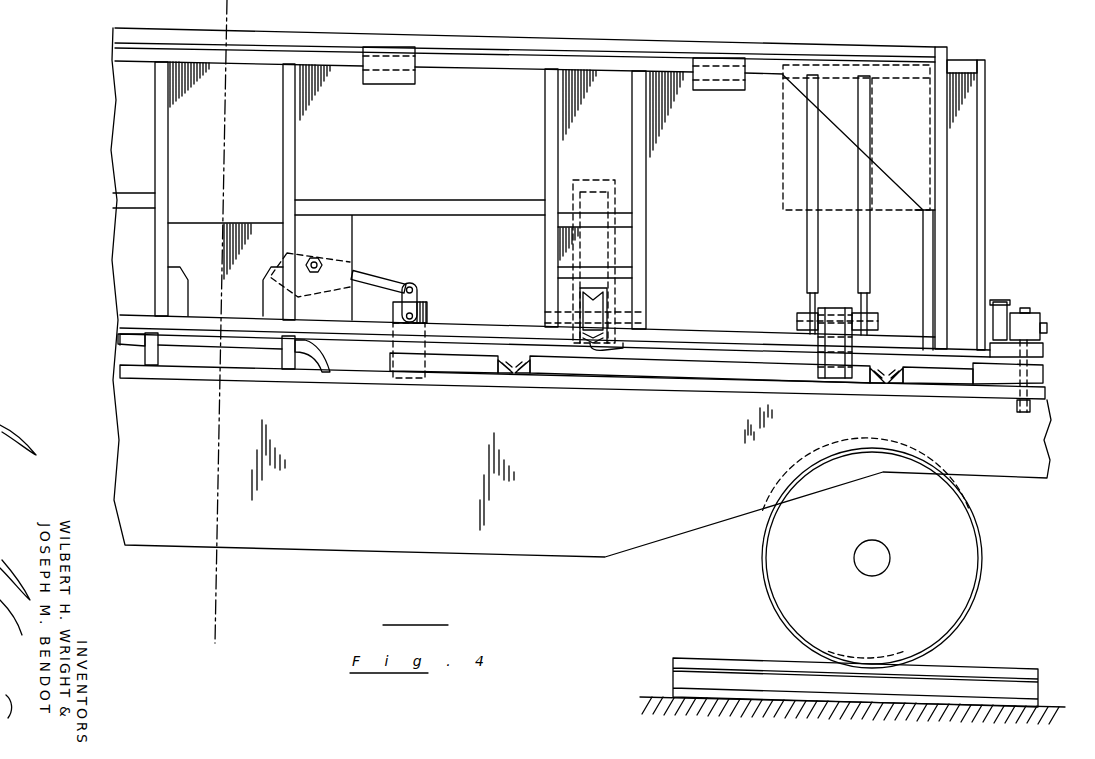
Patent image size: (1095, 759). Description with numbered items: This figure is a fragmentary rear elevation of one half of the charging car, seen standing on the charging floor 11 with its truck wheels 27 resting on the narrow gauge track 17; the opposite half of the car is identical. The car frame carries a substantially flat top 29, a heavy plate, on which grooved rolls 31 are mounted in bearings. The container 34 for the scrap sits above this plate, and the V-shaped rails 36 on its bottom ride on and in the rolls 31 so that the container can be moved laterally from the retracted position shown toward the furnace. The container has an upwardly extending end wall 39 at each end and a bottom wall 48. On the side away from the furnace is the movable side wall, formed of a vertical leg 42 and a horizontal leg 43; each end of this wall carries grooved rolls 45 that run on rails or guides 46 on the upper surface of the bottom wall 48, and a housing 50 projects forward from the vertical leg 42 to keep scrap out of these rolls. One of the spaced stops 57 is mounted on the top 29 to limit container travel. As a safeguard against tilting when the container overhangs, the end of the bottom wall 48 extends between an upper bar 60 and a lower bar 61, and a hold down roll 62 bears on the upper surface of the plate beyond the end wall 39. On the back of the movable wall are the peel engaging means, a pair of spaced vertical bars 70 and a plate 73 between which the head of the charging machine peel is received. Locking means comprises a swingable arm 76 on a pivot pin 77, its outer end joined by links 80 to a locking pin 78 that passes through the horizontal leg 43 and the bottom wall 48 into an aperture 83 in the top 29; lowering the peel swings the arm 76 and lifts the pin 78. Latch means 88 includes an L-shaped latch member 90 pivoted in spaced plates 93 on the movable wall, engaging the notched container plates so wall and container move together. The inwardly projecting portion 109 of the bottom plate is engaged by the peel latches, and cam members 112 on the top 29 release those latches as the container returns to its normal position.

The charging floor 11 is at (655, 697).
The narrow gauge track 17 is at (1003, 667).
The wheels 27 is at (985, 553).
The flat top 29 is at (1045, 393).
The rolls 31 is at (540, 374).
The container 34 is at (902, 43).
The V-shaped rails 36 is at (522, 364).
The end wall 39 is at (948, 188).
The vertical leg 42 is at (760, 200).
The horizontal leg 43 is at (555, 332).
The rotatable rolls 45 is at (606, 298).
The rails or guides 46 is at (625, 346).
The bottom wall 48 is at (666, 372).
The housing 50 is at (615, 188).
The stop 57 is at (940, 378).
The upper bar 60 is at (1045, 350).
The lower bar 61 is at (1045, 374).
The hold down roll 62 is at (1002, 305).
The vertical bars 70 is at (178, 267).
The plate 73 is at (229, 222).
The swingable arm 76 is at (385, 280).
The pivot pin 77 is at (317, 257).
The locking pin 78 is at (428, 312).
The links 80 is at (418, 290).
The aperture 83 is at (430, 378).
The latch means 88 is at (829, 304).
The latch member 90 is at (832, 376).
The spaced plates 93 is at (872, 302).
The inwardly projecting portion 109 is at (120, 340).
The cam members 112 is at (160, 366).